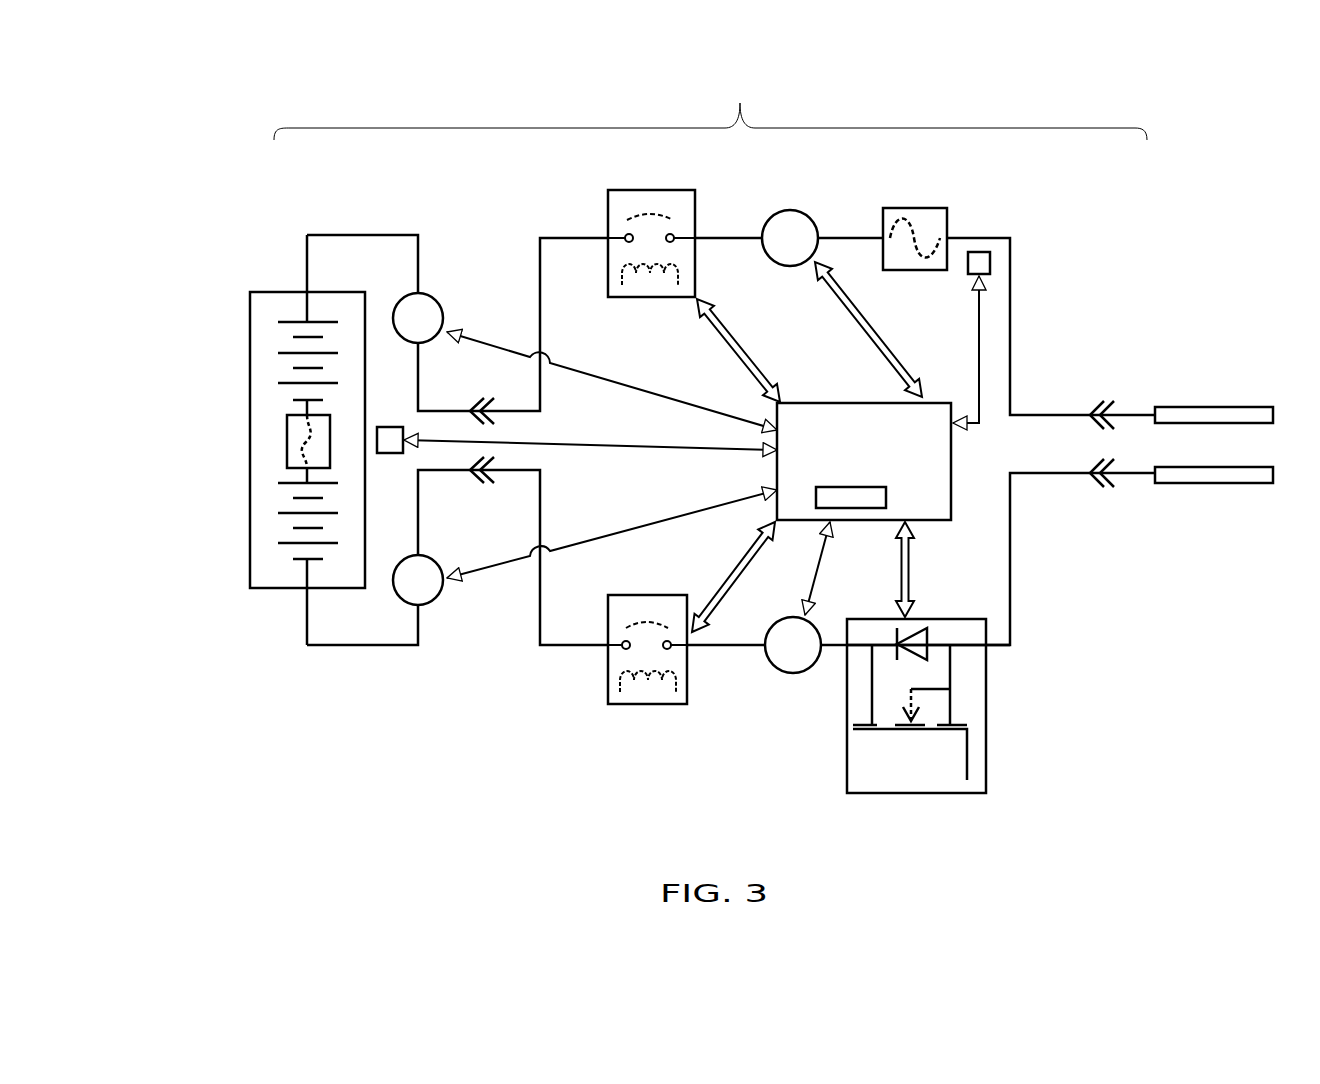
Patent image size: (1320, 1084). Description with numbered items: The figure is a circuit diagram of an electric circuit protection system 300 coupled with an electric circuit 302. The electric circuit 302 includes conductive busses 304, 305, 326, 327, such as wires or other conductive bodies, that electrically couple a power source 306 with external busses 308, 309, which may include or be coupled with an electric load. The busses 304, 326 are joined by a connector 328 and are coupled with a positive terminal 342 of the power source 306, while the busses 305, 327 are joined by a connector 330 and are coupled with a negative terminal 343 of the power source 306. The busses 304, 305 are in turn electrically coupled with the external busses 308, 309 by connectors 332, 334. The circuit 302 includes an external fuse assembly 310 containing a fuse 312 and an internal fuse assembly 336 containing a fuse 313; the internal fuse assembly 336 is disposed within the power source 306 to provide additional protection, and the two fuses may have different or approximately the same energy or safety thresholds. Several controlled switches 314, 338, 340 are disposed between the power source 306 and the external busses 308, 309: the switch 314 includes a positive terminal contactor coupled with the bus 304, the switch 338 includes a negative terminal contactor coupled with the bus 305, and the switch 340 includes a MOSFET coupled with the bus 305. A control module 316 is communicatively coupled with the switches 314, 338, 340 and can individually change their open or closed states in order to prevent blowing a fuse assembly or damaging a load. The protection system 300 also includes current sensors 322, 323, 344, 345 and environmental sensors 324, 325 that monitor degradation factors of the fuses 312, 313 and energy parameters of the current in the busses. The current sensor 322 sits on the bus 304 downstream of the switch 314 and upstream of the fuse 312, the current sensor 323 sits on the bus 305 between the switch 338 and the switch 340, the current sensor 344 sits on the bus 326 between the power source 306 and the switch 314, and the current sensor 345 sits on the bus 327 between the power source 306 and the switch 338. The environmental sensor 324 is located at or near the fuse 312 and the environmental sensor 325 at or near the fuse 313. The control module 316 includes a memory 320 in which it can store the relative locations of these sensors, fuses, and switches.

The electric circuit protection system 300 is at (976, 532).
The electric circuit 302 is at (710, 106).
The conductive bus 304 is at (1011, 340).
The conductive bus 305 is at (1012, 578).
The power source 306 is at (250, 382).
The external bus 308 is at (1207, 423).
The external bus 309 is at (1210, 465).
The external fuse assembly 310 is at (947, 215).
The fuse 312 is at (900, 228).
The fuse 313 is at (287, 445).
The controlled switch 314 is at (697, 216).
The control module 316 is at (953, 470).
The memory 320 is at (886, 497).
The current sensor 322 is at (792, 210).
The current sensor 323 is at (800, 674).
The environmental sensor 324 is at (990, 268).
The environmental sensor 325 is at (392, 454).
The conductive bus 326 is at (413, 232).
The conductive bus 327 is at (378, 648).
The connector 328 is at (495, 410).
The connector 330 is at (502, 482).
The connector 332 is at (1104, 395).
The connector 334 is at (1097, 482).
The internal fuse assembly 336 is at (287, 428).
The controlled switch 338 is at (689, 688).
The controlled switch 340 is at (988, 722).
The positive terminal 342 is at (307, 300).
The negative terminal 343 is at (308, 572).
The current sensor 344 is at (422, 294).
The current sensor 345 is at (432, 600).